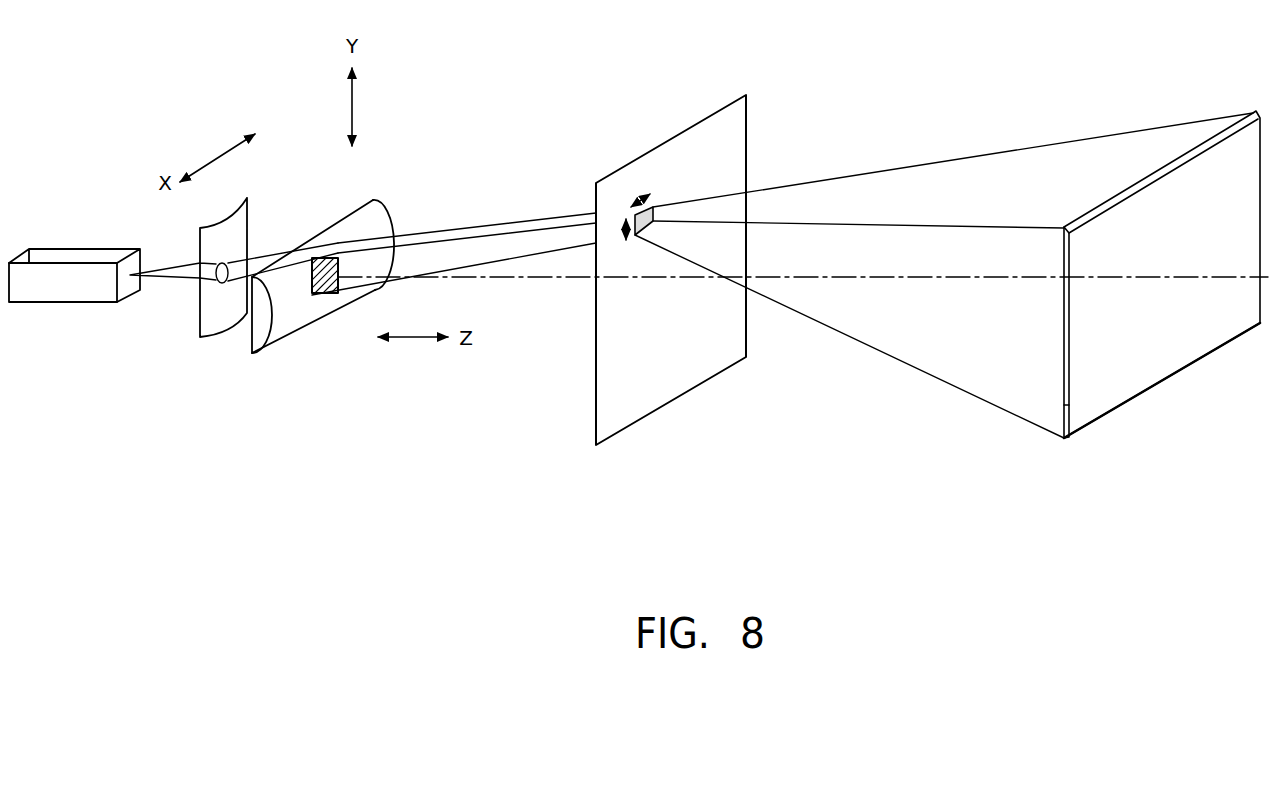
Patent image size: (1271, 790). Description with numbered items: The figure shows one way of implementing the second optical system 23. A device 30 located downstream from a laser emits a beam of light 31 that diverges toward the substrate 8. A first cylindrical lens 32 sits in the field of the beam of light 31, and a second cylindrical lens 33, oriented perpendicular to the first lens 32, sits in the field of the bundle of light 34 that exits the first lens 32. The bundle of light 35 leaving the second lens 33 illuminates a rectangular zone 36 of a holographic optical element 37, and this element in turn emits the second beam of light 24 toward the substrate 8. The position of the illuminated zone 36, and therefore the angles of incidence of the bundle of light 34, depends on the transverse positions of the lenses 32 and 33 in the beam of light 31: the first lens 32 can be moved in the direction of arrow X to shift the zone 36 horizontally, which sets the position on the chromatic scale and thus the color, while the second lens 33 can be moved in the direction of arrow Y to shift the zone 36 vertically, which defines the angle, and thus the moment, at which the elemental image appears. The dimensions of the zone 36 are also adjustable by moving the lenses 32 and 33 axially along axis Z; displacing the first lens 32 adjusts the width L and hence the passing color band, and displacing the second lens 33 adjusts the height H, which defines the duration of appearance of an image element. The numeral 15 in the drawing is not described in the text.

The substrate 8 is at (1128, 367).
The screen surface 15 is at (1062, 405).
The second optical system 23 is at (795, 150).
The second beam of light 24 is at (893, 320).
The device 30 is at (70, 292).
The beam of light 31 is at (178, 281).
The first cylindrical lens 32 is at (223, 320).
The second cylindrical lens 33 is at (290, 317).
The bundle of light 34 is at (260, 255).
The bundle of light 35 is at (447, 238).
The rectangular zone 36 is at (654, 220).
The holographic optical element 37 is at (657, 373).